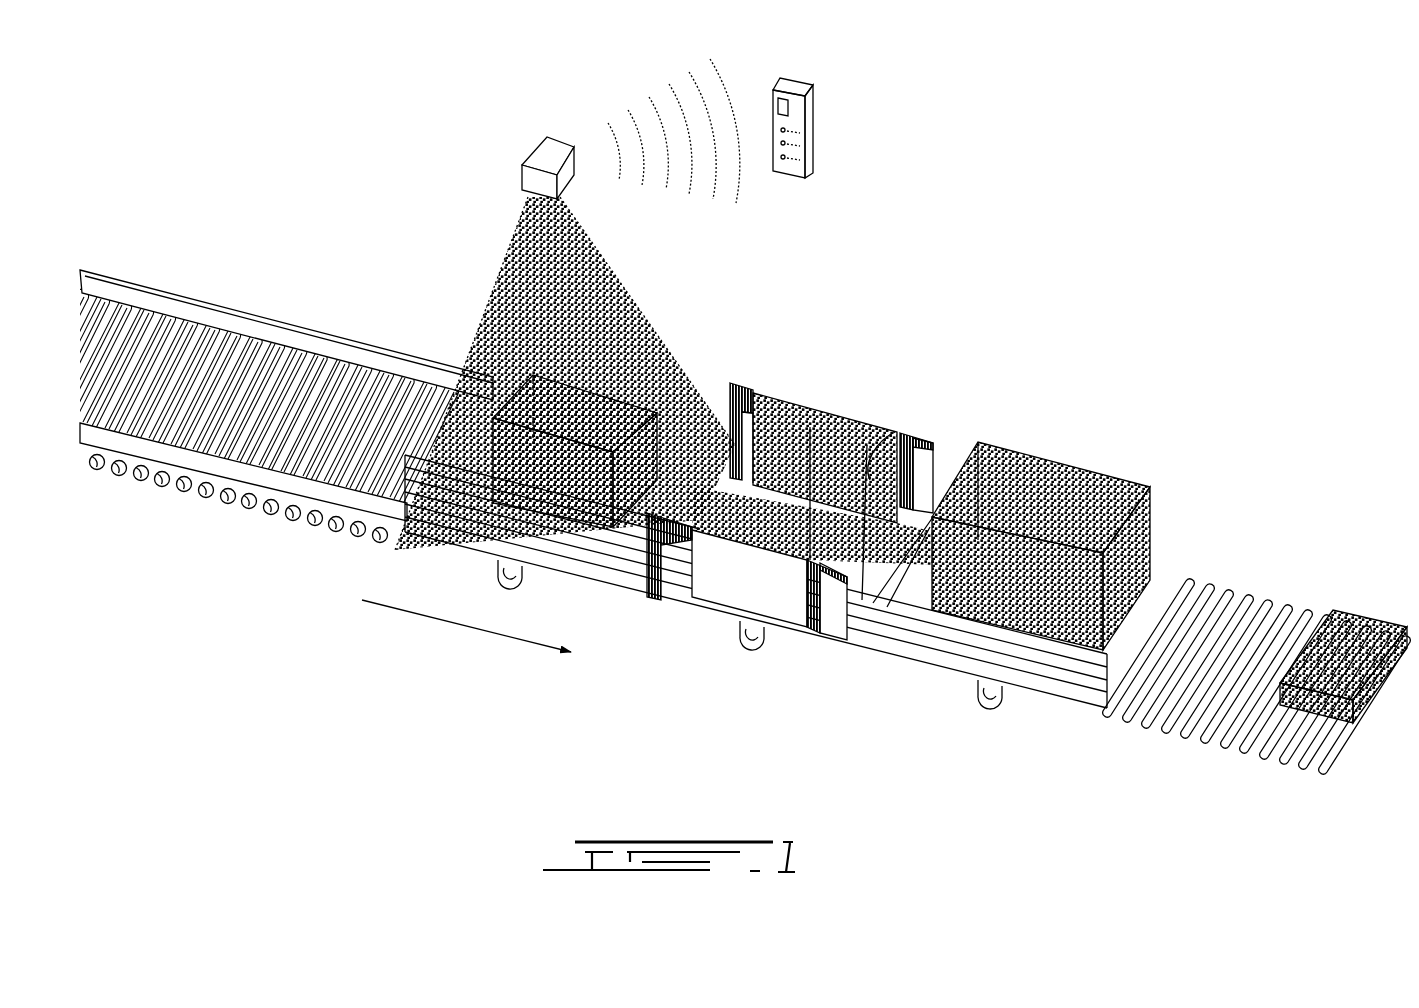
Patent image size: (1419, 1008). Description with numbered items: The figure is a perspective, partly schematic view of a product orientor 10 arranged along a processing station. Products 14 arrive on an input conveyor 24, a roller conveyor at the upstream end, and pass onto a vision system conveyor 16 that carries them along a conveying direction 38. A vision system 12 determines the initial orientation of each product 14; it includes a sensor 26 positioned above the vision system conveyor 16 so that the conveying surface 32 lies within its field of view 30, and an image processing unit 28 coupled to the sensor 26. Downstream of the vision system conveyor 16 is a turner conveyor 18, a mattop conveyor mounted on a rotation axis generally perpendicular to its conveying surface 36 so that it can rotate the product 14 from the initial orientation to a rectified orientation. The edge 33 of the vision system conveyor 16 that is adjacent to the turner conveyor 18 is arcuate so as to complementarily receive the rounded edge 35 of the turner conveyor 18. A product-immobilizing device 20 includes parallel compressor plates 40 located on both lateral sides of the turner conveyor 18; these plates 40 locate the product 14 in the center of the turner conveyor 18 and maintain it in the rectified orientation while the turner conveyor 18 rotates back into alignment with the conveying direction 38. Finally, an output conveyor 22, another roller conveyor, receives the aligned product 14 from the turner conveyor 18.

The product orientor 10 is at (914, 213).
The vision system 12 is at (563, 137).
The product 14 is at (510, 482).
The vision system conveyor 16 is at (603, 582).
The turner conveyor 18 is at (883, 590).
The product-immobilizing device 20 is at (791, 604).
The output conveyor 22 is at (1160, 600).
The input conveyor 24 is at (256, 310).
The sensor 26 is at (542, 152).
The image processing unit 28 is at (799, 120).
The field of view 30 is at (617, 308).
The conveying surface 32 is at (551, 545).
The edge 33 is at (666, 598).
The rounded edge 35 is at (750, 385).
The conveying surface 36 is at (870, 480).
The conveying direction 38 is at (404, 602).
The compressor plates 40 is at (723, 593).